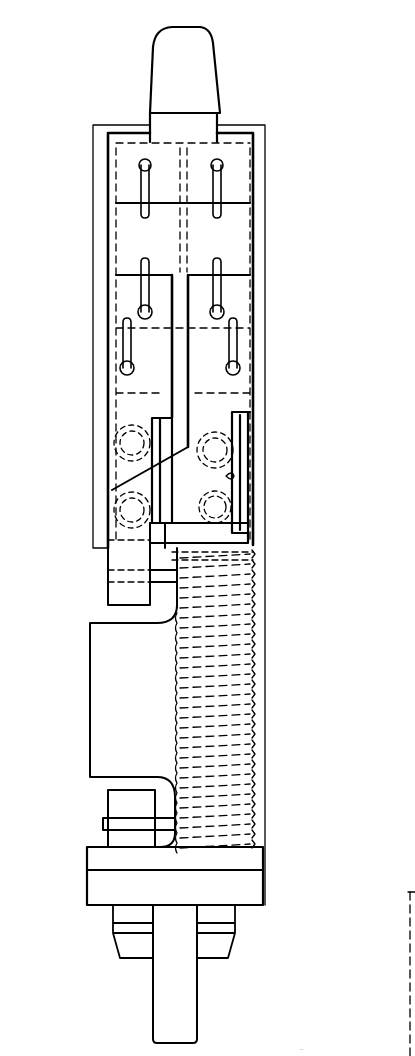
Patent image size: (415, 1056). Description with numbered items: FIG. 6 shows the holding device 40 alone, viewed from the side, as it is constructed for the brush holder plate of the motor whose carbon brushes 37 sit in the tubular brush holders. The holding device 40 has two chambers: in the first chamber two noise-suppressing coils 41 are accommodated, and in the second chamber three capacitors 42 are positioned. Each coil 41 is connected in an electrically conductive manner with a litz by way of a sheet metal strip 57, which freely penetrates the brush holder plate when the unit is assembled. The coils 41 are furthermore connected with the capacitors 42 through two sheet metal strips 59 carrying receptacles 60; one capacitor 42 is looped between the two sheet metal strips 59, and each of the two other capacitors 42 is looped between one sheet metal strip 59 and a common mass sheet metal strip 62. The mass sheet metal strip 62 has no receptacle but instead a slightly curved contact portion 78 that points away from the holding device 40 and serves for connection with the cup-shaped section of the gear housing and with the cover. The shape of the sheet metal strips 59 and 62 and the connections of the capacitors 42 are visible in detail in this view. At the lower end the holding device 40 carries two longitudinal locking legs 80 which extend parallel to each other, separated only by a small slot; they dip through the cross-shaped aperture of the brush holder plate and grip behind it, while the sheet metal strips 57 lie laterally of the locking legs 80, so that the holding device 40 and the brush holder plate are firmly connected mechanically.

The contact portion 78 is at (198, 57).
The mass sheet metal strip 62 is at (240, 176).
The capacitors 42 is at (240, 385).
The sheet metal strips 59 is at (228, 407).
The receptacles 60 is at (227, 450).
The holding device 40 is at (103, 685).
The noise-suppressing coils 41 is at (252, 720).
The locking legs 80 is at (140, 942).
The sheet metal strip 57 is at (172, 993).
The carbon brushes 37 is at (410, 935).